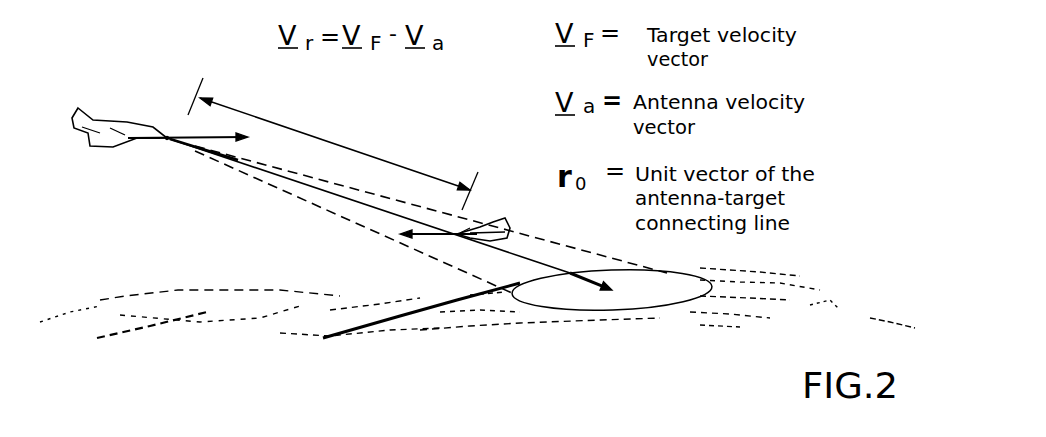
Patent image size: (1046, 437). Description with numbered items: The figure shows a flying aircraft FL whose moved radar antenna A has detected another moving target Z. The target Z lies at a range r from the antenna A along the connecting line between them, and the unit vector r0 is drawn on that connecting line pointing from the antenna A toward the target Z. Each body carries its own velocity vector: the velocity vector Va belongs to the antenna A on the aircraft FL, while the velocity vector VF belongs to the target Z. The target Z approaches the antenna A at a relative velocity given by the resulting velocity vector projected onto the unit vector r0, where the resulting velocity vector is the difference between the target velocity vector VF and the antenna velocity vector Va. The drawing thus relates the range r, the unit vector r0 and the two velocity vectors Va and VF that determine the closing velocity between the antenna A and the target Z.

The flying aircraft FL is at (107, 127).
The radar antenna A is at (167, 140).
The moving target Z is at (492, 220).
The velocity vector of the antenna Va is at (213, 130).
The velocity vector of the target VF is at (457, 259).
The range r is at (333, 144).
The unit vector on the connecting line r0 is at (591, 292).